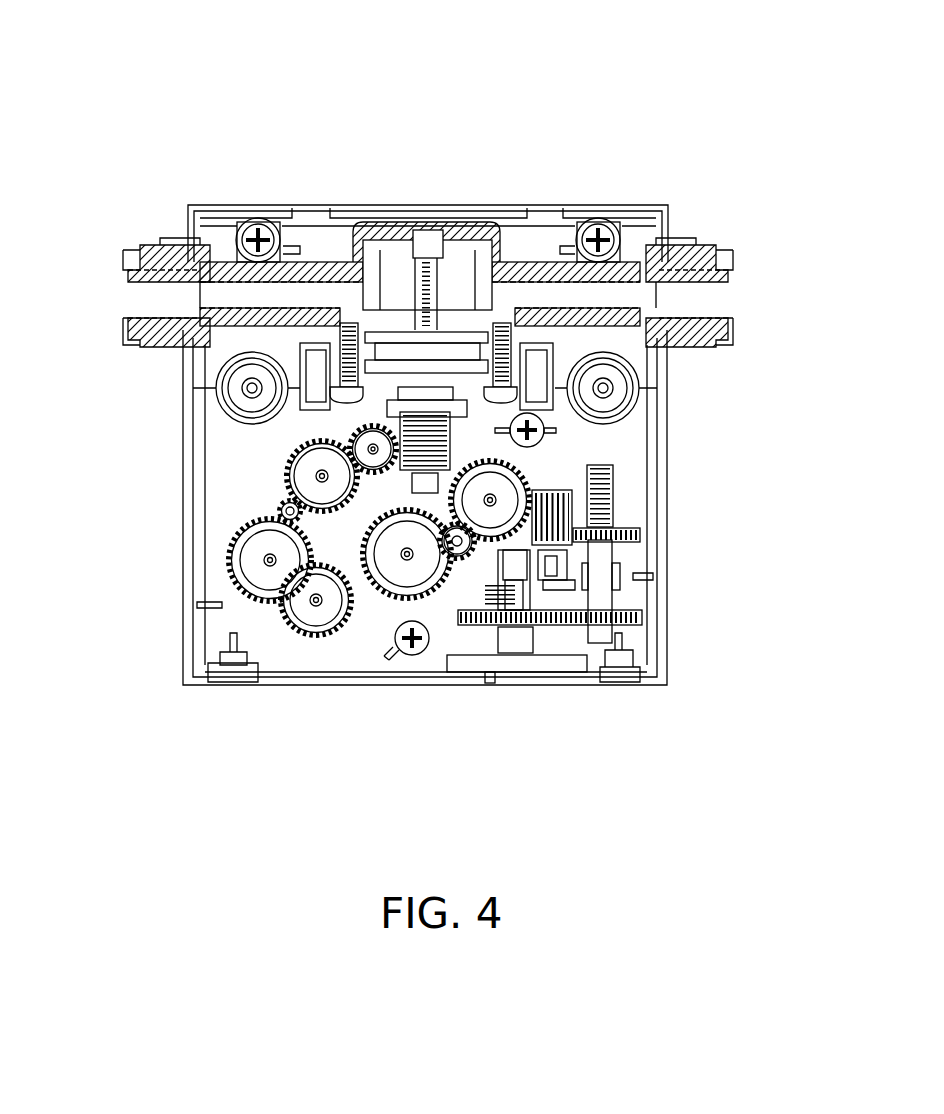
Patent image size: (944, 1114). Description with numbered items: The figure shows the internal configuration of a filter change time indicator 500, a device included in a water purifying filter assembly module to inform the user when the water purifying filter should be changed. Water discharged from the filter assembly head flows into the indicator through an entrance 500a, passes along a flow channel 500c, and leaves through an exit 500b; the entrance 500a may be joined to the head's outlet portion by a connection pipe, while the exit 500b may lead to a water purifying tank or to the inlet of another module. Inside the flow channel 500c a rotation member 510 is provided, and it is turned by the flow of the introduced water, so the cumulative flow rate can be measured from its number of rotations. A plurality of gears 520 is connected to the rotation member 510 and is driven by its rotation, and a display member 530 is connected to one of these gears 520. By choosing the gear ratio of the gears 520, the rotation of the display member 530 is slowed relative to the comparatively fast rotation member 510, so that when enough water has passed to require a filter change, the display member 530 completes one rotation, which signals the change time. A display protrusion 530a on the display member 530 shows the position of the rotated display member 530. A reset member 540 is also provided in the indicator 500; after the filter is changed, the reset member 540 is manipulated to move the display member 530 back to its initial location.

The filter change time indicator 500 is at (200, 34).
The entrance 500a is at (714, 246).
The exit 500b is at (140, 246).
The flow channel 500c is at (300, 291).
The rotation member 510 is at (455, 288).
The plurality of gears 520 is at (293, 457).
The display member 530 is at (473, 663).
The display protrusion 530a is at (487, 683).
The reset member 540 is at (593, 682).